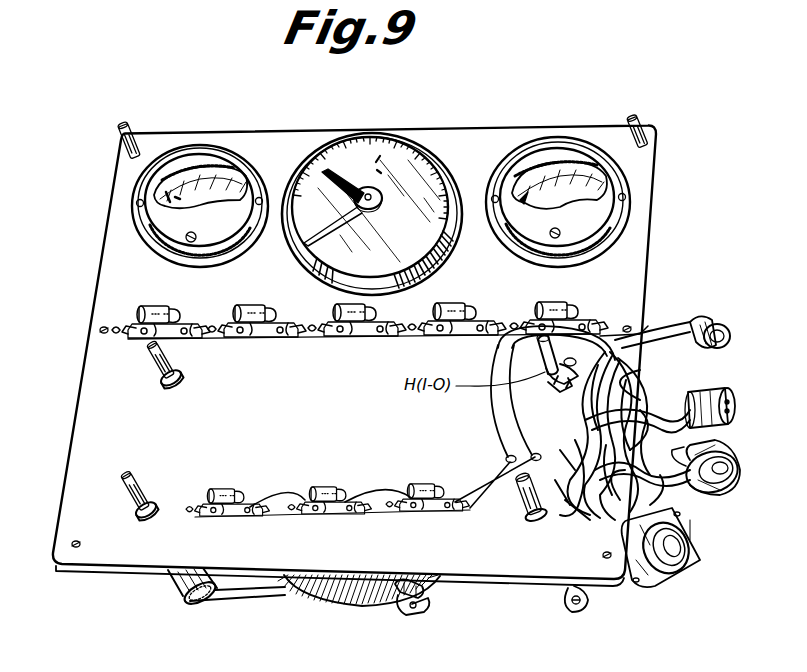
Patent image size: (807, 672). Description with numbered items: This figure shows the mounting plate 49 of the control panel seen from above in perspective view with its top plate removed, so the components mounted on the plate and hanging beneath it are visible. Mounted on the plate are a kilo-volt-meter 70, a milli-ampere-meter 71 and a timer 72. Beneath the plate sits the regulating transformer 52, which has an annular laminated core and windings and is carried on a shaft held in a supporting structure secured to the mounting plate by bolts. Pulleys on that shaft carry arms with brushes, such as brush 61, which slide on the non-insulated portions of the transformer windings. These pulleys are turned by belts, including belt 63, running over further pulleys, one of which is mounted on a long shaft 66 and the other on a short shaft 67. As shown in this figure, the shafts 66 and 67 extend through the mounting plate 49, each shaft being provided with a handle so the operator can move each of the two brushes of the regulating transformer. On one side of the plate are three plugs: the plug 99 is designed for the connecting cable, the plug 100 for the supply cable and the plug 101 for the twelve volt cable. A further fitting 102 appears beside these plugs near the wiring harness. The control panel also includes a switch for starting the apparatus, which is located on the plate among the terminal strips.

The mounting plate 49 is at (85, 420).
The kilo-volt-meter 70 is at (200, 165).
The timer 72 is at (396, 150).
The milli-ampere-meter 71 is at (564, 162).
The connector 102 is at (712, 322).
The plug 101 is at (716, 395).
The plug 100 is at (718, 450).
The plug 99 is at (686, 535).
The long shaft 66 is at (145, 488).
The short shaft 67 is at (520, 510).
The belt 63 is at (245, 603).
The regulating transformer 52 is at (365, 600).
The brush 61 is at (428, 598).